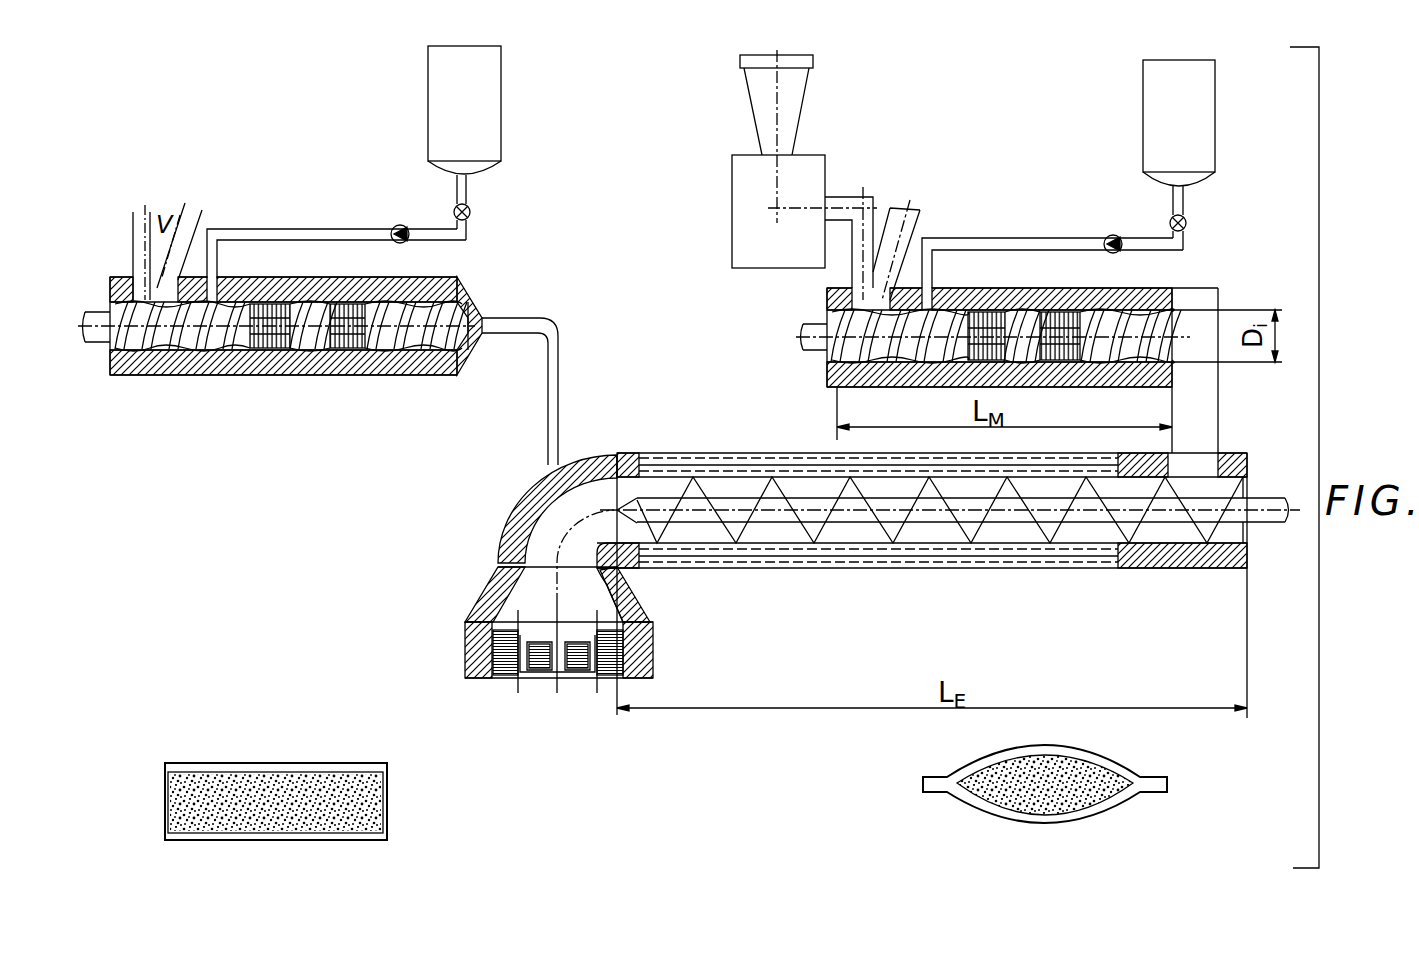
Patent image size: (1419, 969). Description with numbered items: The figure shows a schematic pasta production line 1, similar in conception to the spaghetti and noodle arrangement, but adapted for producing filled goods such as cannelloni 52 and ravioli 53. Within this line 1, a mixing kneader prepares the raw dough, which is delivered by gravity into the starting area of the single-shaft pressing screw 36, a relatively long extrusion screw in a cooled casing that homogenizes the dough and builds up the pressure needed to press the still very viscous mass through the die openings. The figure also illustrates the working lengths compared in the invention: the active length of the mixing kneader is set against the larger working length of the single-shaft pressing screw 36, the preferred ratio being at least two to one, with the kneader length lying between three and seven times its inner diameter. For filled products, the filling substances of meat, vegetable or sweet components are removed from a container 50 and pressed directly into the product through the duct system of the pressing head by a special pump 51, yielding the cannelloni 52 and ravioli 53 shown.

The mixing extruder / screw machine 1 is at (802, 365).
The single-shaft pressing screw 36 is at (870, 575).
The container 50 is at (482, 119).
The special pump 51 is at (331, 386).
The cannelloni 52 is at (265, 805).
The ravioli 53 is at (1012, 807).